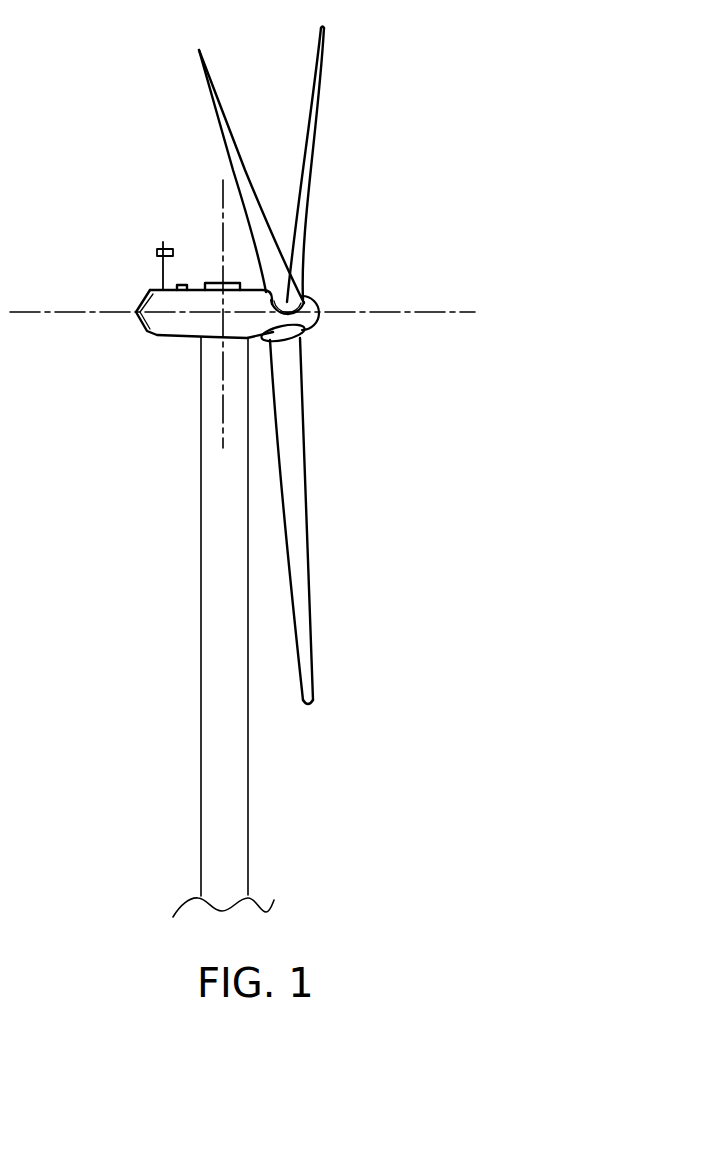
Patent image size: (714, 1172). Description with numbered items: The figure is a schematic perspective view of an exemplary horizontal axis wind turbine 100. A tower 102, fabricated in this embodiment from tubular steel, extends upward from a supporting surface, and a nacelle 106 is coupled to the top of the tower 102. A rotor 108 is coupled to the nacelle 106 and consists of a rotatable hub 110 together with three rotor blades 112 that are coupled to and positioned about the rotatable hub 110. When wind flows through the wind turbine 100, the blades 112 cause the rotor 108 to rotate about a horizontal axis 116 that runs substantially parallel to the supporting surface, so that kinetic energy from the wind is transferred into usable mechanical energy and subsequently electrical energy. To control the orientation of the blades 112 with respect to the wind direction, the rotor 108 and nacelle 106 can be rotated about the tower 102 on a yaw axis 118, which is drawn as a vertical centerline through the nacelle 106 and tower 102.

The wind turbine 100 is at (105, 140).
The tower 102 is at (200, 573).
The nacelle 106 is at (173, 338).
The rotor 108 is at (318, 344).
The rotatable hub 110 is at (315, 317).
The rotor blade 112 is at (223, 103).
The horizontal axis 116 is at (464, 315).
The yaw axis 118 is at (222, 183).